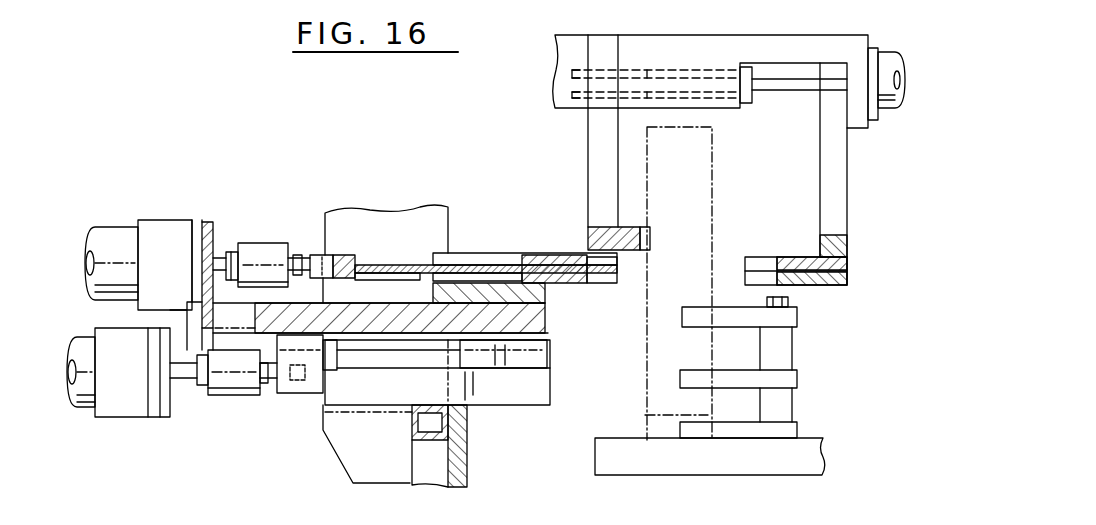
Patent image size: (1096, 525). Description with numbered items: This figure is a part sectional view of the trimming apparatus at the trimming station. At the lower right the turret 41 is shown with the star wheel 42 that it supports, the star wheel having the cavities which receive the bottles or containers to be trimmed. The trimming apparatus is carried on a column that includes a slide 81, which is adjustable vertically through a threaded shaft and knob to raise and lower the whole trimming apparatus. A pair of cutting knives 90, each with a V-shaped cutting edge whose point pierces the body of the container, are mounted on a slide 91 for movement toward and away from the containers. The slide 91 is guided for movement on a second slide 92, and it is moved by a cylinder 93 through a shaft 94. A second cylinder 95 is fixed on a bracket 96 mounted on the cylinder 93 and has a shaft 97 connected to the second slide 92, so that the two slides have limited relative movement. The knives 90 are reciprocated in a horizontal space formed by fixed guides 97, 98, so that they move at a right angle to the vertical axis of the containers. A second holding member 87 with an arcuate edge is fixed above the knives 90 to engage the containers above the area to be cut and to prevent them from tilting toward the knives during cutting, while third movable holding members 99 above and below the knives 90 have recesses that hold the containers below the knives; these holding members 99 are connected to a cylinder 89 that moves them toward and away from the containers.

The turret 41 is at (808, 434).
The star wheel 42 is at (808, 340).
The slide 81 is at (422, 463).
The second holding member 87 is at (597, 183).
The cylinder 89 is at (652, 237).
The cutting knives 90 is at (492, 265).
The slide 91 is at (263, 255).
The second slide 92 is at (507, 400).
The cylinder 93 is at (120, 235).
The shaft 94 is at (305, 252).
The second cylinder 95 is at (85, 405).
The bracket 96 is at (185, 380).
The shaft 97 is at (557, 265).
The fixed guide 98 is at (567, 282).
The third movable holding members 99 is at (767, 255).